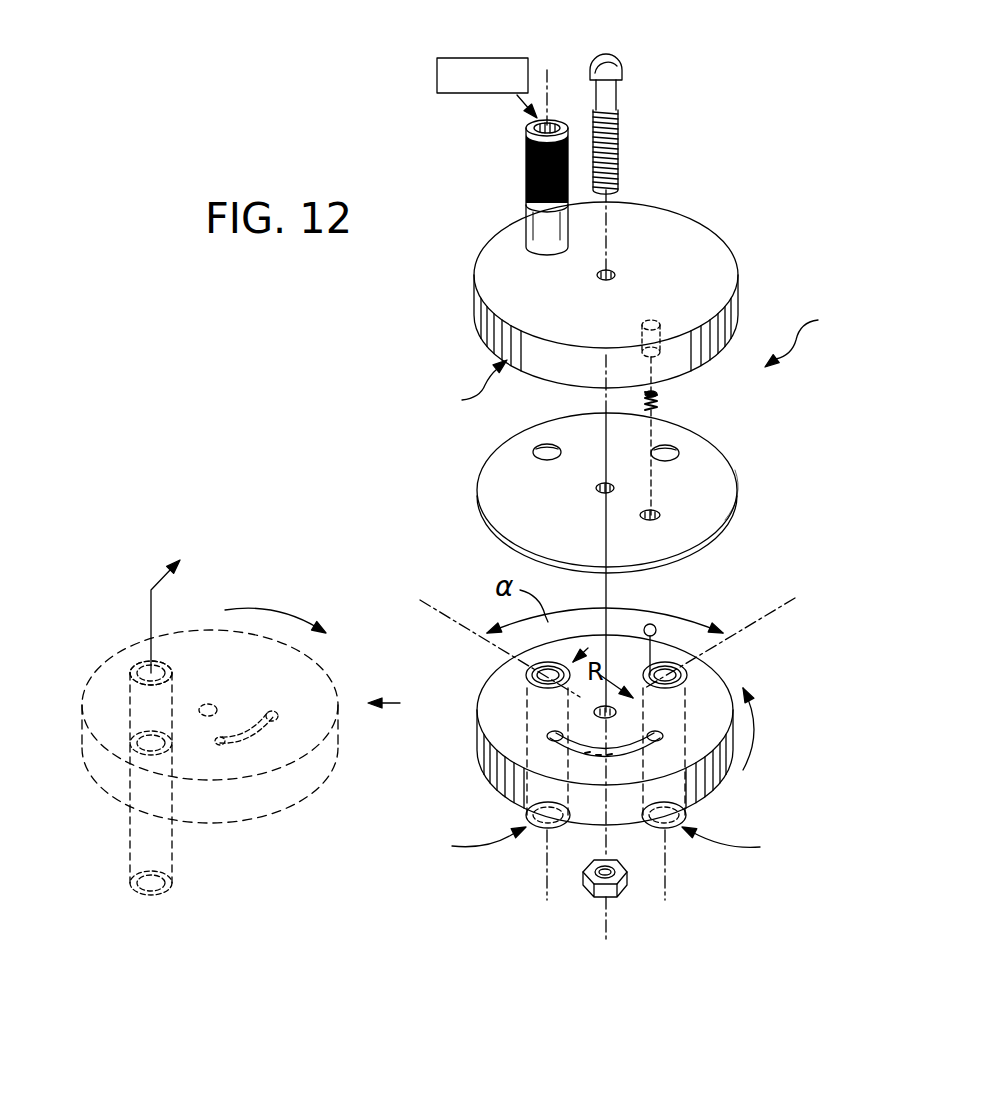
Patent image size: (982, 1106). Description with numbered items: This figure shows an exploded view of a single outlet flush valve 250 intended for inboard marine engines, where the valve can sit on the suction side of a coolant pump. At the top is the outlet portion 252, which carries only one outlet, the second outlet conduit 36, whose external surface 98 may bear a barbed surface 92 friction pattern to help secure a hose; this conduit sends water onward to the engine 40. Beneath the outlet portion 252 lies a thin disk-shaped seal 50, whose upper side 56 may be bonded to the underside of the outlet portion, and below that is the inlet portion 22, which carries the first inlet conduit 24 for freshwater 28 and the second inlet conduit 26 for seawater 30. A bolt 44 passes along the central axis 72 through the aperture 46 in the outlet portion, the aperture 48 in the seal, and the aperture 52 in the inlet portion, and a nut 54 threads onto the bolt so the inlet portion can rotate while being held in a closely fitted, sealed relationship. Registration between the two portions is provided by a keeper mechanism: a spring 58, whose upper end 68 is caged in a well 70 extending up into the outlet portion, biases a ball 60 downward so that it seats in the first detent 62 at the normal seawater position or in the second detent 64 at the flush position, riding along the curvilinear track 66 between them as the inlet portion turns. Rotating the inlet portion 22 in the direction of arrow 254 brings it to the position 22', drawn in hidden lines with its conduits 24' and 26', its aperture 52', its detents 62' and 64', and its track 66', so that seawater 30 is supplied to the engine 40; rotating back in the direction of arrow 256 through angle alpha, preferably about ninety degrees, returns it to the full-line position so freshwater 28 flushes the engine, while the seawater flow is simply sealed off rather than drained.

The inlet portion 22 is at (645, 730).
The inlet portion in normal operation position 22' is at (241, 744).
The first inlet conduit 24 is at (524, 784).
The first inlet conduit in normal operation position 24' is at (120, 778).
The second inlet conduit 26 is at (688, 784).
The second inlet conduit in normal operation position 26' is at (102, 702).
The freshwater 28 is at (470, 838).
The seawater 30 is at (733, 847).
The second outlet conduit 36 is at (520, 187).
The engine 40 is at (450, 93).
The bolt 44 is at (625, 63).
The aperture in outlet portion 46 is at (616, 275).
The aperture in seal 48 is at (596, 489).
The seal 50 is at (720, 452).
The aperture in inlet portion 52 is at (577, 712).
The aperture in inlet portion in normal operation position 52' is at (241, 698).
The nut 54 is at (612, 897).
The upper side of seal 56 is at (722, 500).
The spring 58 is at (705, 408).
The ball 60 is at (655, 626).
The first detent 62 is at (689, 721).
The first detent in normal operation position 62' is at (328, 736).
The second detent 64 is at (525, 727).
The second detent in normal operation position 64' is at (202, 804).
The track 66 is at (609, 743).
The track in normal operation position 66' is at (285, 791).
The upper end of spring 68 is at (660, 395).
The well 70 is at (642, 340).
The central axis 72 is at (605, 250).
The barbed surface 92 is at (526, 178).
The external surface of second outlet conduit 98 is at (526, 150).
The flush valve 250 is at (815, 337).
The outlet portion 252 is at (738, 270).
The arrow 254 is at (757, 742).
The arrow 256 is at (258, 614).